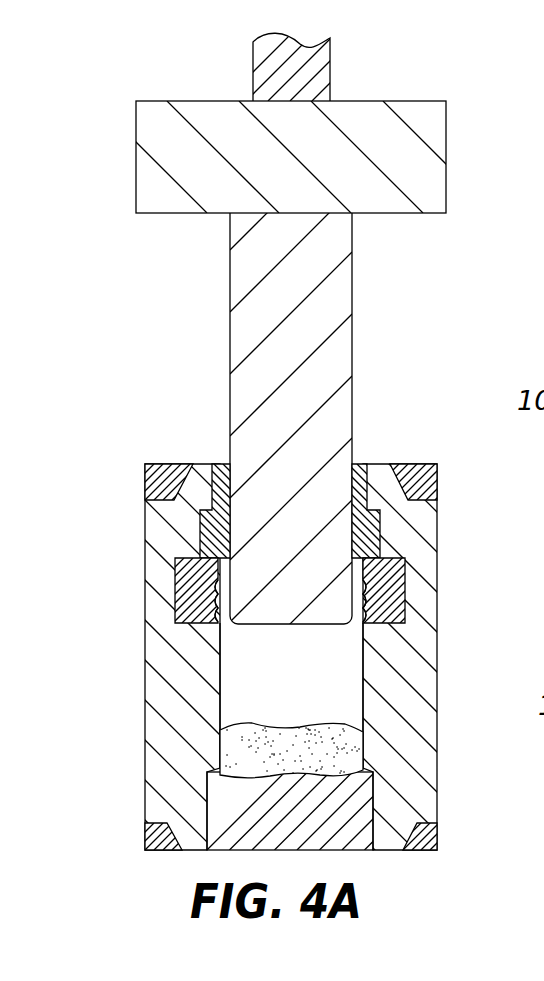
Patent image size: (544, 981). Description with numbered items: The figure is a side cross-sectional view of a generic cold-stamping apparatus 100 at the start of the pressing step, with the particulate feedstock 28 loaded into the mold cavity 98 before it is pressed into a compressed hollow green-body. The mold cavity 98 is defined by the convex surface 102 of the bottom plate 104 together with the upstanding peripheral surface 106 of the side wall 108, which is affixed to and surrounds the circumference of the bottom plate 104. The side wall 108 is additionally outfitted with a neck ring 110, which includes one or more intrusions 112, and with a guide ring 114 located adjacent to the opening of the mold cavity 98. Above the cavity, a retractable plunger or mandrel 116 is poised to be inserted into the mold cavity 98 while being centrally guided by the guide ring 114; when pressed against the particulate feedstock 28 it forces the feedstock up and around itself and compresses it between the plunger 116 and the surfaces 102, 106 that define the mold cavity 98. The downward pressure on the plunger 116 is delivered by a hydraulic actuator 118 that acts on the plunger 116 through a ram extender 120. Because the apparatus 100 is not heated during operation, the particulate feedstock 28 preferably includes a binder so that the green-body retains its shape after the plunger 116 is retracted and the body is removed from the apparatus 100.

The particulate feedstock 28 is at (275, 748).
The mold cavity 98 is at (365, 656).
The cold-stamping apparatus 100 is at (158, 442).
The convex surface 102 is at (355, 745).
The bottom plate 104 is at (363, 832).
The upstanding peripheral surface 106 is at (215, 665).
The side wall 108 is at (163, 692).
The neck ring 110 is at (393, 588).
The intrusions 112 is at (367, 598).
The guide ring 114 is at (370, 535).
The retractable plunger 116 is at (325, 288).
The hydraulic actuator 118 is at (312, 62).
The ram extender 120 is at (400, 168).